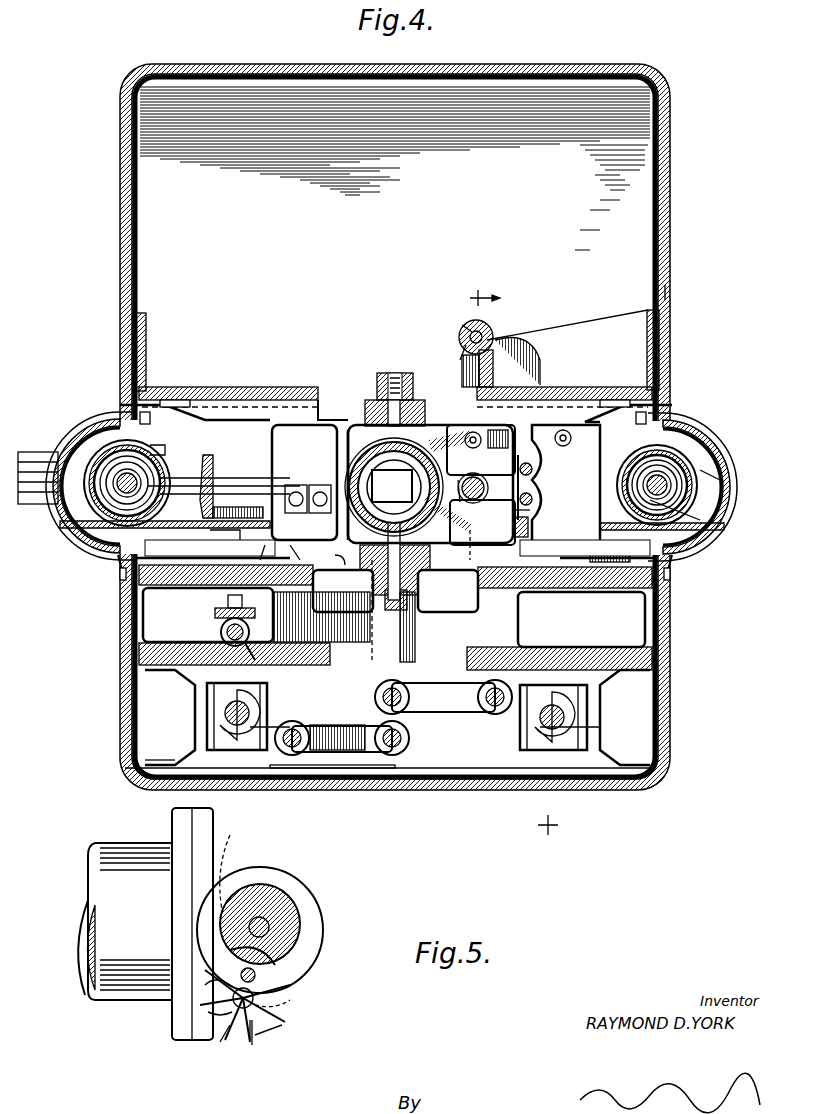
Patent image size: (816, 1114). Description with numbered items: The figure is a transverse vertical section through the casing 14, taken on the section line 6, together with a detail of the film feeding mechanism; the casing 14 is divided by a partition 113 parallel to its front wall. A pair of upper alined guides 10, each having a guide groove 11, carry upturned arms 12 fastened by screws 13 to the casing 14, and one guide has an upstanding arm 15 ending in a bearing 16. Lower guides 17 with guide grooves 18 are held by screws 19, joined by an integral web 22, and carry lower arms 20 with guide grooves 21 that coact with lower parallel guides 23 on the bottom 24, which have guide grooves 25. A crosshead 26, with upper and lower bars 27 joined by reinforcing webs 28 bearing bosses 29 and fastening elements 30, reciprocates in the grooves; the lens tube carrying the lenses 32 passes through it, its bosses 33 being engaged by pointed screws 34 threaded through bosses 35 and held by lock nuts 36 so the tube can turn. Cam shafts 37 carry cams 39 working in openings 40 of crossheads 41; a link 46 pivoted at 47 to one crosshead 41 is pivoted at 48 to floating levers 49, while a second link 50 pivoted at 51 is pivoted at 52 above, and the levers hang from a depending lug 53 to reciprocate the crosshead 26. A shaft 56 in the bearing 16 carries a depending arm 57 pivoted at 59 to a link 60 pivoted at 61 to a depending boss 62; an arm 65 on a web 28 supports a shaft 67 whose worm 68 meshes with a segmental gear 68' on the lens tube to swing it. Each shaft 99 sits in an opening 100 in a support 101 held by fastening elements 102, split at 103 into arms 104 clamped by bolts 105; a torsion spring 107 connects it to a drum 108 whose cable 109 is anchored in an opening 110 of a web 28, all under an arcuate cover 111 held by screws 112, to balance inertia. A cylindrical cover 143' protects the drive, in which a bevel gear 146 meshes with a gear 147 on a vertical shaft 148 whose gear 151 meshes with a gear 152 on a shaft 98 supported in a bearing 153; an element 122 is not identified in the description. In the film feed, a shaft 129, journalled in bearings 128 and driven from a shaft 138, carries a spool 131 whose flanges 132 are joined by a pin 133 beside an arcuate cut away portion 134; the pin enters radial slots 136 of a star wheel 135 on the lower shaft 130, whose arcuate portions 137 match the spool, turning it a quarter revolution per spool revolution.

In FIG. 4, the partition 113 is at (145, 270).
In FIG. 4, the casing 14 is at (666, 278).
In FIG. 4, the screws 13 is at (650, 318).
In FIG. 4, the upturned arms 12 is at (146, 340).
In FIG. 4, the upper alined guides 10 is at (232, 386).
In FIG. 4, the section line 6 is at (514, 567).
In FIG. 4, the bearing 16 is at (492, 330).
In FIG. 4, the upstanding arm 15 is at (517, 353).
In FIG. 4, the shaft 56 is at (468, 330).
In FIG. 4, the depending arm 57 is at (462, 345).
In FIG. 4, the lock nuts 36 is at (395, 372).
In FIG. 4, the bosses 35 is at (372, 400).
In FIG. 4, the pointed screws 34 is at (415, 400).
In FIG. 4, the crosshead 26 is at (332, 398).
In FIG. 4, the upper and lower bosses 33 is at (368, 432).
In FIG. 4, the lenses 32 is at (429, 484).
In FIG. 4, the upper and lower bars 27 is at (430, 420).
In FIG. 4, the pivot 51 is at (435, 470).
In FIG. 4, the pivot 59 is at (470, 448).
In FIG. 4, the segmental gear 68' is at (481, 450).
In FIG. 4, the link 60 is at (483, 497).
In FIG. 4, the worm 68 is at (480, 495).
In FIG. 4, the shaft 67 is at (463, 499).
In FIG. 4, the rod 122 is at (468, 538).
In FIG. 4, the arm 65 is at (509, 523).
In FIG. 4, the bosses 29 is at (533, 466).
In FIG. 4, the fastening elements 30 is at (533, 478).
In FIG. 4, the opening 110 is at (530, 520).
In FIG. 4, the reinforcing webs 28 is at (272, 441).
In FIG. 4, the depending boss 62 is at (572, 436).
In FIG. 4, the pivot 61 is at (572, 442).
In FIG. 4, the torsion spring 107 is at (95, 520).
In FIG. 4, the arcuate cover 111 is at (100, 555).
In FIG. 4, the screws 112 is at (118, 568).
In FIG. 4, the shaft 99 is at (118, 466).
In FIG. 4, the cylindrical cover 143' is at (36, 453).
In FIG. 4, the opening 100 is at (118, 430).
In FIG. 4, the support 101 is at (393, 441).
In FIG. 4, the guide groove 11 is at (395, 485).
In FIG. 4, the bolts or screws 105 is at (185, 465).
In FIG. 4, the split 103 is at (170, 442).
In FIG. 4, the arms 104 is at (210, 453).
In FIG. 4, the bevel gear 146 is at (222, 470).
In FIG. 4, the bevel gear 147 is at (298, 504).
In FIG. 4, the vertical shaft 148 is at (302, 511).
In FIG. 4, the cable 109 is at (736, 497).
In FIG. 4, the drum 108 is at (708, 505).
In FIG. 4, the fastening elements 102 is at (162, 386).
In FIG. 4, the guide groove 18 is at (170, 560).
In FIG. 4, the bevel gear 151 is at (252, 550).
In FIG. 4, the bevel gear 152 is at (284, 550).
In FIG. 4, the depending lug 53 is at (330, 553).
In FIG. 4, the screws 19 is at (122, 578).
In FIG. 4, the lower guides 17 is at (605, 594).
In FIG. 4, the lower arm 20 is at (170, 643).
In FIG. 4, the integral web 22 is at (386, 655).
In FIG. 4, the shaft 98 is at (222, 626).
In FIG. 4, the bearing 153 is at (252, 660).
In FIG. 4, the guide groove 21 is at (397, 717).
In FIG. 4, the cams 39 is at (250, 692).
In FIG. 4, the cam shafts 37 is at (230, 712).
In FIG. 4, the openings 40 is at (260, 728).
In FIG. 4, the guide groove 25 is at (150, 762).
In FIG. 4, the second link 50 is at (455, 705).
In FIG. 4, the pivot 52 is at (378, 705).
In FIG. 4, the floating levers 49 is at (470, 745).
In FIG. 4, the link 46 is at (345, 770).
In FIG. 4, the pivot 47 is at (292, 756).
In FIG. 4, the pivot 48 is at (392, 756).
In FIG. 4, the bottom 24 is at (308, 770).
In FIG. 4, the crossheads 41 is at (262, 760).
In FIG. 4, the lower parallel guide 23 is at (160, 790).
In FIG. 5, the shaft 138 is at (168, 924).
In FIG. 5, the flanges 132 is at (305, 885).
In FIG. 5, the spool 131 is at (270, 895).
In FIG. 5, the shaft 129 is at (270, 925).
In FIG. 5, the arcuate cut away portion 134 is at (290, 950).
In FIG. 5, the pin 133 is at (290, 985).
In FIG. 5, the star wheel 135 is at (292, 1002).
In FIG. 5, the bearings 128 is at (290, 1010).
In FIG. 5, the lower shaft 130 is at (252, 1040).
In FIG. 5, the radial slots 136 is at (228, 1045).
In FIG. 5, the arcuate portions 137 is at (252, 1048).